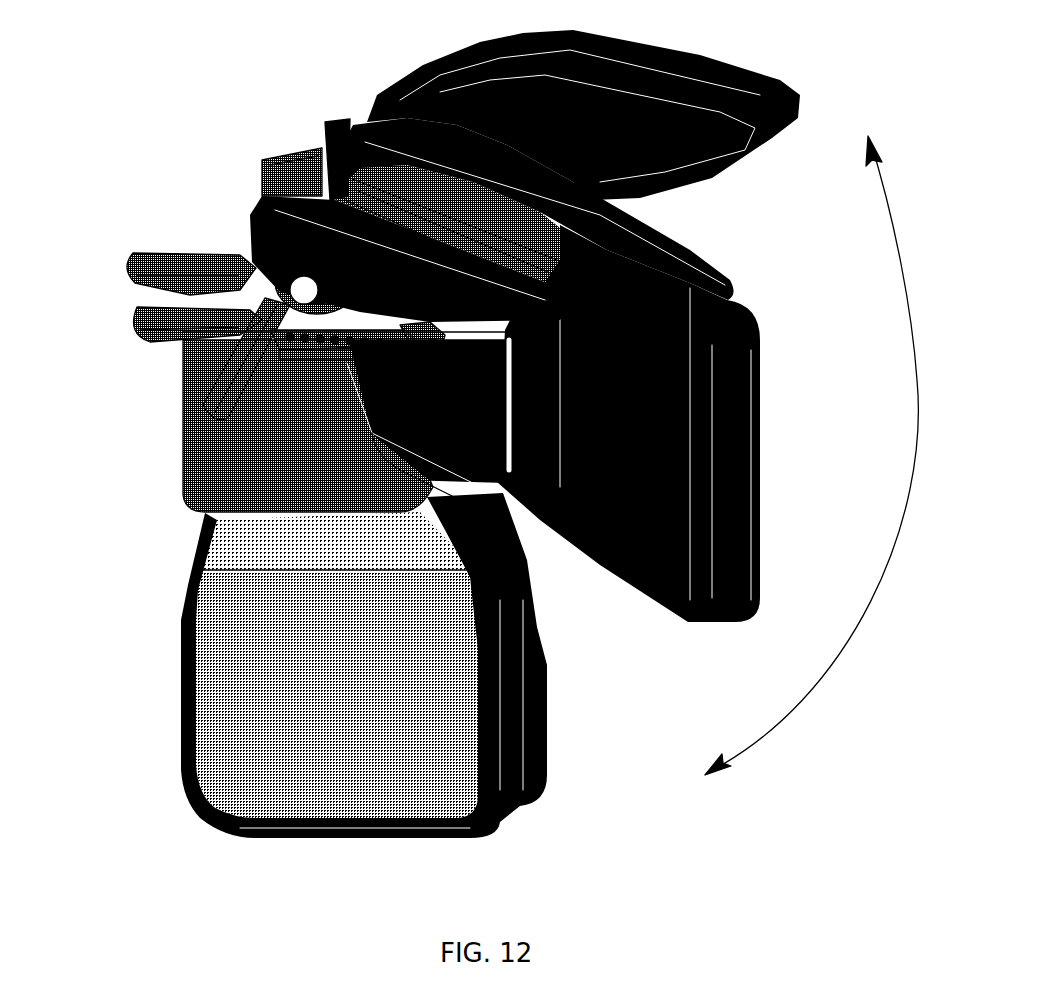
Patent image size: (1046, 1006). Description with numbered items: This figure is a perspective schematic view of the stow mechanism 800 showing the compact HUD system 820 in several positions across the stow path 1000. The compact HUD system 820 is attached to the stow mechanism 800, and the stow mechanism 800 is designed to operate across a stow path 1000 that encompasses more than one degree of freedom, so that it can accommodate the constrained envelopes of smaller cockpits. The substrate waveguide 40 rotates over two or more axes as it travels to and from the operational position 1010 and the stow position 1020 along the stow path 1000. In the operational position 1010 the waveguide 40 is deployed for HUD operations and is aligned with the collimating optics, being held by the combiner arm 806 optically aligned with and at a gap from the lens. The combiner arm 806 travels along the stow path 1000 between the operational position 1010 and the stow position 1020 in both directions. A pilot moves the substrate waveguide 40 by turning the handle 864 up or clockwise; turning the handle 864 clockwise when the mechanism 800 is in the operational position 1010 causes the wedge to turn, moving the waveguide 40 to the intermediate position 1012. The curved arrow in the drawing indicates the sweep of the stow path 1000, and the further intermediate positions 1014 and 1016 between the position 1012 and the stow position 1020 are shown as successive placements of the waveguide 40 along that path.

The stow mechanism 800 is at (230, 120).
The handle 864 is at (188, 263).
The combiner arm 806 is at (176, 448).
The compact HUD system 820 is at (146, 843).
The substrate waveguide 40 is at (337, 718).
The stow position 1020 is at (793, 90).
The hinge band 1016 is at (690, 244).
The side panel 1014 is at (760, 483).
The operational position 1010 is at (553, 743).
The position 1012 is at (497, 820).
The stow path 1000 is at (836, 455).